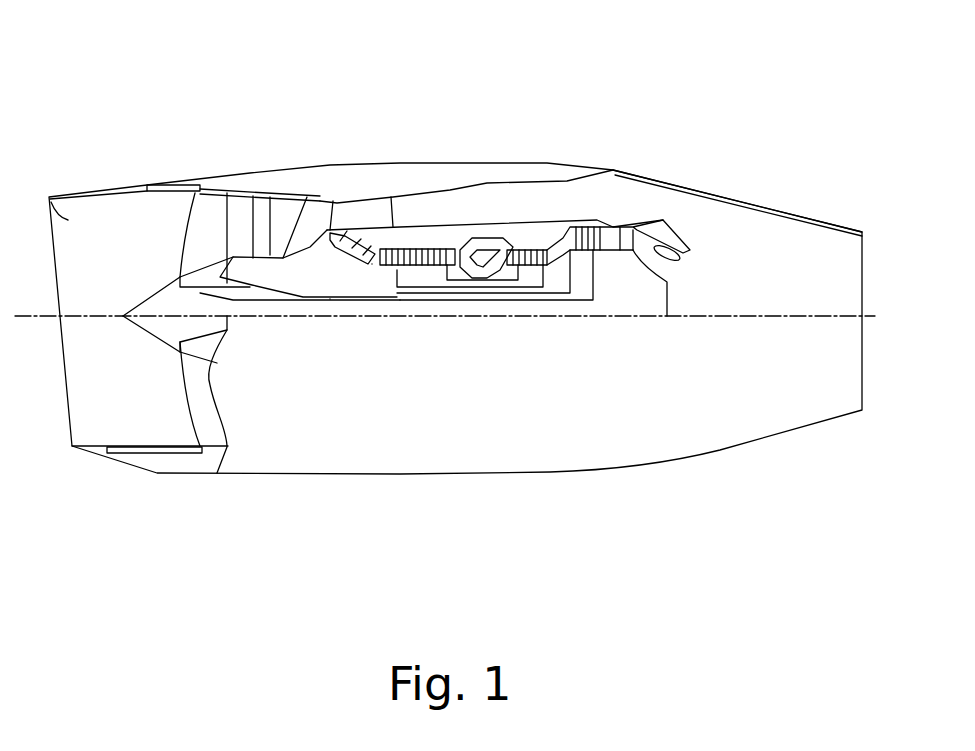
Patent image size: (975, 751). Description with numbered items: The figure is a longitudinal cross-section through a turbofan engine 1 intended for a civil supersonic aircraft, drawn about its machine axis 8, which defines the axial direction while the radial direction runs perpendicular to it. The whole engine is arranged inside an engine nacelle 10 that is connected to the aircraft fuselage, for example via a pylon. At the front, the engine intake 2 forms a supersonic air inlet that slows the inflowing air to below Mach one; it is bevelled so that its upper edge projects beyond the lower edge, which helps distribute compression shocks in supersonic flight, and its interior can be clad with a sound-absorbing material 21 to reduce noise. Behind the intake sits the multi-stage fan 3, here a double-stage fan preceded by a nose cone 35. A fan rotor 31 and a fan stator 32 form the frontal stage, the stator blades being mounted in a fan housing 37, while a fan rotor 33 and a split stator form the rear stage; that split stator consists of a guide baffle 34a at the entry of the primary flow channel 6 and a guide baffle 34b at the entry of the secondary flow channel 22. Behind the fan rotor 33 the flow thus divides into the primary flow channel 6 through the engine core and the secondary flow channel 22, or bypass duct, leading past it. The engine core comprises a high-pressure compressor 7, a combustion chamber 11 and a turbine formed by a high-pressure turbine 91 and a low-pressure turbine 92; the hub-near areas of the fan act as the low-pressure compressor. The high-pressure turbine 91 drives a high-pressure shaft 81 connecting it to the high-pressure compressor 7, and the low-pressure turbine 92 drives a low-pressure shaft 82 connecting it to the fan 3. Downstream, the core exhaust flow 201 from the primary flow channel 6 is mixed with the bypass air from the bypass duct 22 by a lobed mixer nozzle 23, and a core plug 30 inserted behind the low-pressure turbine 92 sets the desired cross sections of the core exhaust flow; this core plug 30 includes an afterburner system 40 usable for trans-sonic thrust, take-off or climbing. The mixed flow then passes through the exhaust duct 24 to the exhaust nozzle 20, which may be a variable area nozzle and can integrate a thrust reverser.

The turbofan engine 1 is at (117, 116).
The engine intake 2 is at (100, 197).
The multi-stage fan 3 is at (280, 180).
The primary flow channel 6 is at (372, 264).
The high-pressure compressor 7 is at (420, 286).
The machine axis 8 is at (23, 318).
The engine nacelle 10 is at (342, 474).
The combustion chamber 11 is at (475, 253).
The exhaust nozzle 20 is at (834, 204).
The sound-absorbing material 21 is at (170, 193).
The secondary flow channel 22 is at (433, 207).
The lobed mixer nozzle 23 is at (662, 220).
The exhaust duct 24 is at (823, 290).
The core plug 30 is at (653, 314).
The fan rotor 31 is at (214, 187).
The fan stator 32 is at (264, 200).
The fan rotor 33 is at (301, 197).
The guide baffle 34a is at (330, 199).
The guide baffle 34b is at (380, 196).
The nose cone 35 is at (157, 307).
The fan housing 37 is at (238, 190).
The afterburner system 40 is at (701, 264).
The high-pressure shaft 81 is at (453, 281).
The low-pressure shaft 82 is at (330, 299).
The high-pressure turbine 91 is at (528, 274).
The low-pressure turbine 92 is at (580, 261).
The core exhaust flow 201 is at (637, 252).